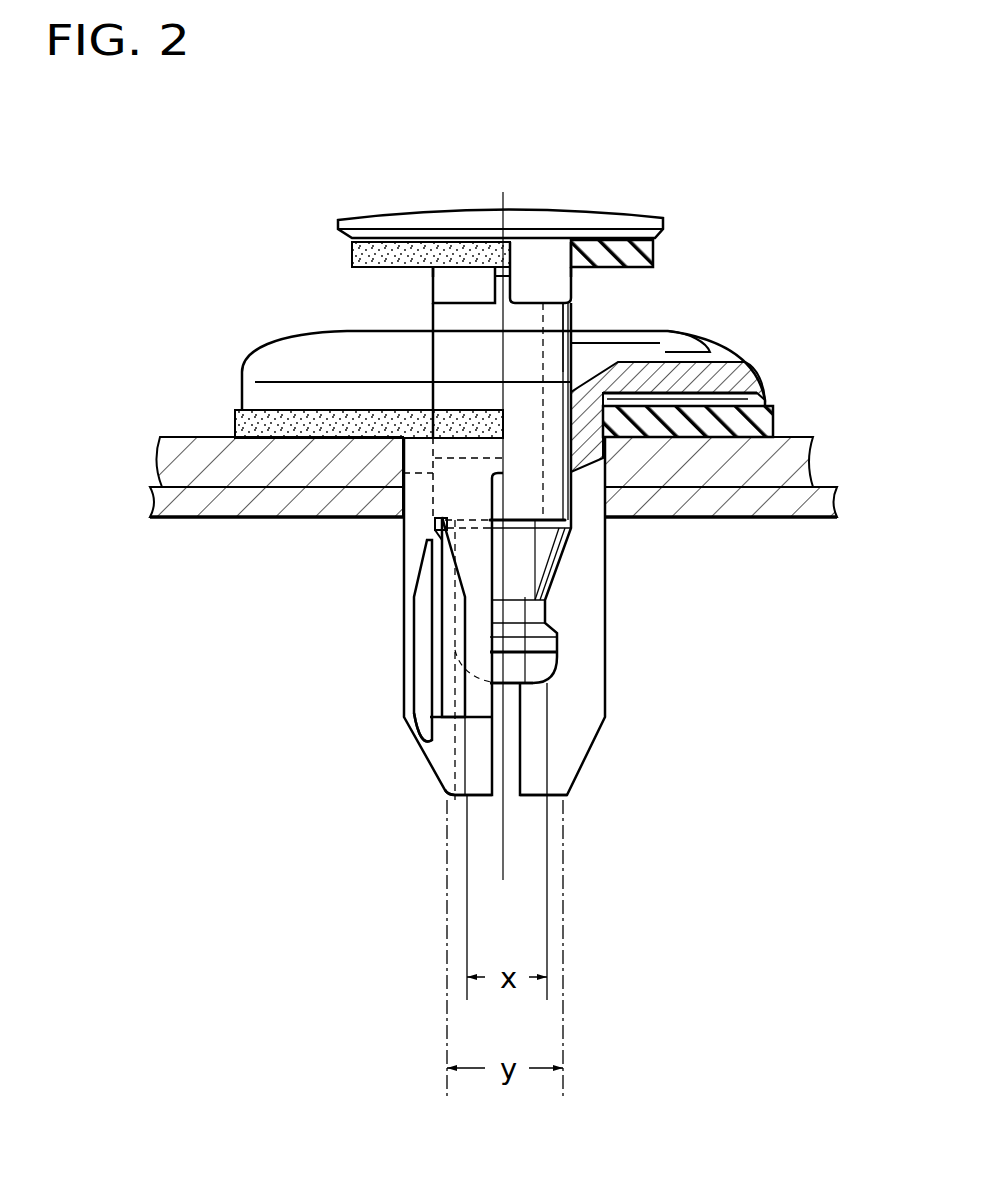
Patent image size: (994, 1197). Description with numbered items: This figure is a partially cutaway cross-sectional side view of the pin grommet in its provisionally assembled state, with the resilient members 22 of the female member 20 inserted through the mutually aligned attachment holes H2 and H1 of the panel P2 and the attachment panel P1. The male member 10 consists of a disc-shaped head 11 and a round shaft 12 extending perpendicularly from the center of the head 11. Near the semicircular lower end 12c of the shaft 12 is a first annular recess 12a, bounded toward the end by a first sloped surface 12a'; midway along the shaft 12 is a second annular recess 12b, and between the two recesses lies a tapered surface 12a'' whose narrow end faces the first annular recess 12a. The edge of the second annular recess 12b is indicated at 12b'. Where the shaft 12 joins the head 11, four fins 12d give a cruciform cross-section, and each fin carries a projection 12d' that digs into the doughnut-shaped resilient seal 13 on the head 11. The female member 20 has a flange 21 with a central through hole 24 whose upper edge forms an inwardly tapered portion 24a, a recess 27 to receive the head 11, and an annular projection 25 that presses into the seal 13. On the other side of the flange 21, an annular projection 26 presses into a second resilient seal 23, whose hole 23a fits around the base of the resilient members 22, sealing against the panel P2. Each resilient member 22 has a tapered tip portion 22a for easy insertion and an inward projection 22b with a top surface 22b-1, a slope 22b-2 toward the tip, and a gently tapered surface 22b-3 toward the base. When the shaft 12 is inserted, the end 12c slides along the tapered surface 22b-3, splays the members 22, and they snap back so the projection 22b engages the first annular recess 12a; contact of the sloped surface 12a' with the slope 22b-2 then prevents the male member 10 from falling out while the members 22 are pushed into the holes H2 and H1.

The male member 10 is at (610, 212).
The head 11 is at (390, 212).
The round shaft 12 is at (567, 492).
The first annular recess 12a is at (369, 640).
The first sloped surface 12a' is at (363, 716).
The tapered surface 12a'' is at (380, 656).
The second annular recess 12b is at (376, 659).
The projection edge 12b' is at (342, 583).
The semicircular lower end 12c is at (525, 672).
The fins 12d is at (497, 228).
The projection 12d' is at (475, 289).
The resilient seal 13 is at (650, 257).
The female member 20 is at (327, 800).
The flange 21 is at (262, 360).
The resilient members 22 is at (607, 727).
The foot of leg 22a is at (575, 790).
The inward projection 22b is at (558, 610).
The top surface 22b-1 is at (560, 624).
The slope 22b-2 is at (560, 645).
The gently tapered surface 22b-3 is at (568, 560).
The resilient seal 23 is at (772, 415).
The hole 23a is at (605, 453).
The through hole 24 is at (571, 413).
The inwardly tapered portion 24a is at (571, 372).
The annular projection 25 is at (690, 350).
The annular projection 26 is at (692, 405).
The recess 27 is at (643, 333).
The attachment hole H1 is at (403, 498).
The attachment hole H2 is at (225, 462).
The attachment panel P1 is at (810, 507).
The panel P2 is at (800, 444).